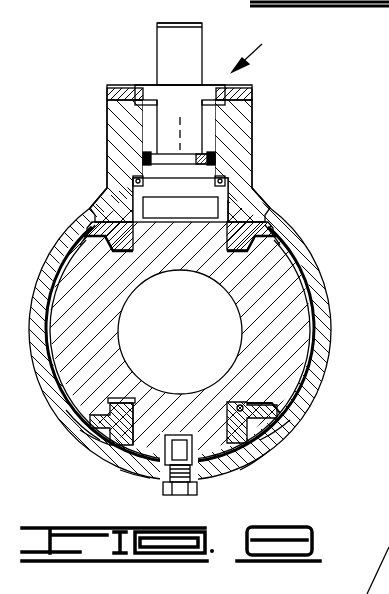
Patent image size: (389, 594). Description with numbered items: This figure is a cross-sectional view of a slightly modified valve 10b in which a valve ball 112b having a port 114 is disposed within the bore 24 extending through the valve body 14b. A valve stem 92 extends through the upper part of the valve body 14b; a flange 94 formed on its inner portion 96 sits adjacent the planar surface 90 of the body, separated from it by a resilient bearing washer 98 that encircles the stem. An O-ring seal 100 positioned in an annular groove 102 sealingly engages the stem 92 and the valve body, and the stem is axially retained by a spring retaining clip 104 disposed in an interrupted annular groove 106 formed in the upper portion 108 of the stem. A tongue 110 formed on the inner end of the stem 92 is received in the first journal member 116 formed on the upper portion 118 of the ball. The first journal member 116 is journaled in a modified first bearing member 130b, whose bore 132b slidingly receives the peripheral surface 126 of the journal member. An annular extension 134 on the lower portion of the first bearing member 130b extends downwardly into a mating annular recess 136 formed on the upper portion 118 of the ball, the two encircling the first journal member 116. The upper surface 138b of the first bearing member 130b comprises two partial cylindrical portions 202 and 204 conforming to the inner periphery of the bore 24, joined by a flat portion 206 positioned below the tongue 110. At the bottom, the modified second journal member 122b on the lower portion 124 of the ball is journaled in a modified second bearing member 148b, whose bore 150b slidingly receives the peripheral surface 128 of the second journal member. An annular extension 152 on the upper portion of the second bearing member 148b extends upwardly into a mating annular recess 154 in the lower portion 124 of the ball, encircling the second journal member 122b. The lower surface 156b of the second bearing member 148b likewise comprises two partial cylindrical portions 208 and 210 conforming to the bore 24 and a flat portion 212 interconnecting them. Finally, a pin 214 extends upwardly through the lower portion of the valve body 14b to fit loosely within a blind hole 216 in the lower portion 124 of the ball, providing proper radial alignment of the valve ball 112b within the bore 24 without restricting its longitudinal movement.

The valve 10b is at (264, 53).
The valve body 14b is at (313, 366).
The bore 24 is at (302, 312).
The planar surface 90 is at (224, 184).
The valve stem 92 is at (192, 44).
The flange 94 is at (213, 165).
The inner portion 96 is at (146, 172).
The bearing washer 98 is at (133, 180).
The O-ring seal 100 is at (150, 157).
The annular groove 102 is at (205, 153).
The spring retaining clip 104 is at (180, 85).
The interrupted annular groove 106 is at (165, 83).
The upper portion 108 is at (160, 34).
The tongue 110 is at (185, 250).
The valve ball 112b is at (292, 337).
The port 114 is at (193, 332).
The first journal member 116 is at (173, 219).
The upper portion 118 is at (203, 304).
The second journal member 122b is at (140, 464).
The lower portion 124 is at (206, 369).
The peripheral surface 126 is at (131, 240).
The peripheral surface 128 is at (134, 416).
The first bearing member 130b is at (268, 222).
The bore 132b is at (238, 252).
The annular extension 134 is at (97, 266).
The mating annular recess 136 is at (76, 250).
The upper surface 138b is at (99, 206).
The second bearing member 148b is at (275, 447).
The bore 150b is at (134, 430).
The annular extension 152 is at (118, 400).
The mating annular recess 154 is at (253, 403).
The lower surface 156b is at (236, 470).
The partial cylindrical portion 202 is at (90, 224).
The partial cylindrical portion 204 is at (272, 238).
The flat portion 206 is at (240, 213).
The partial cylindrical portion 208 is at (97, 420).
The partial cylindrical portion 210 is at (288, 438).
The flat portion 212 is at (105, 442).
The pin 214 is at (162, 480).
The blind hole 216 is at (193, 442).